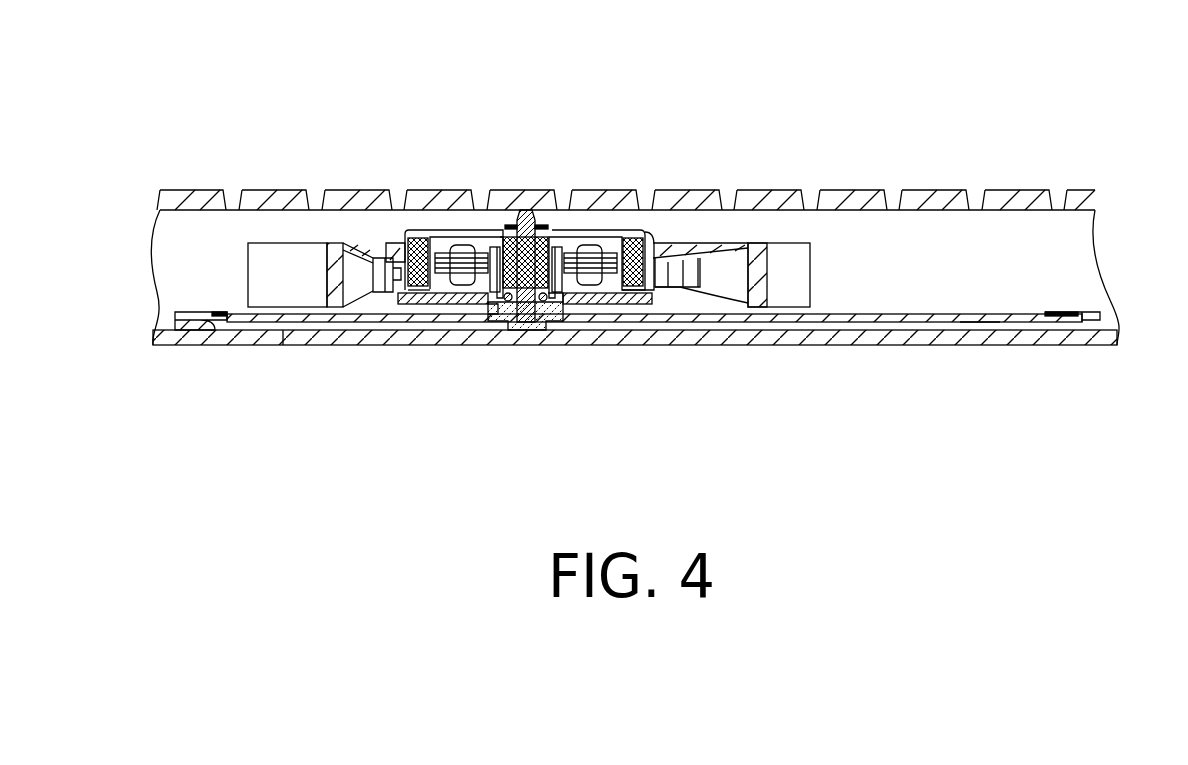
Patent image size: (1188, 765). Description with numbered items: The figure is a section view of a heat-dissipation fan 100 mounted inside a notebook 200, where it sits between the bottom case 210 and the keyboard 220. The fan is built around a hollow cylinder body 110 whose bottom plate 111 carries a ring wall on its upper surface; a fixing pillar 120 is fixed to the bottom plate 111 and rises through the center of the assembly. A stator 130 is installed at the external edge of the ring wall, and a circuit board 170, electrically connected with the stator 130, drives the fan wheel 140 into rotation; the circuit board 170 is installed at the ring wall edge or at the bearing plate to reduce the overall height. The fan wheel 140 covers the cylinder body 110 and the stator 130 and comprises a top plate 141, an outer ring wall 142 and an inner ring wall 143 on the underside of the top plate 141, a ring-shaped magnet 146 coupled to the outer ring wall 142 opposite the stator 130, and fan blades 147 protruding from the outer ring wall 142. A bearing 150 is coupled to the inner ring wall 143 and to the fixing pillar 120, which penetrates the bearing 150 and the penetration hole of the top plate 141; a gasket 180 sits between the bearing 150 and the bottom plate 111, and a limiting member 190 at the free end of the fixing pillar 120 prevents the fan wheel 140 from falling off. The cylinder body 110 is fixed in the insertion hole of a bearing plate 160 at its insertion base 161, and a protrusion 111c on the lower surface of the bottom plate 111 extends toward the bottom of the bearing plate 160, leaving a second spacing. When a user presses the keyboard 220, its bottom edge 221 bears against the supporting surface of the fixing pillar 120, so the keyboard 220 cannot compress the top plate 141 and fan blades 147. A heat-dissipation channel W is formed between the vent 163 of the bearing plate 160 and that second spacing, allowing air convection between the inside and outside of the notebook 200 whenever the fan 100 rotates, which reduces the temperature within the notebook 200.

The heat-dissipation fan 100 is at (265, 235).
The hollow cylinder body 110 is at (640, 302).
The bottom plate 111 is at (548, 316).
The protrusion 111c is at (511, 302).
The fixing pillar 120 is at (520, 228).
The stator 130 is at (632, 250).
The fan wheel 140 is at (778, 242).
The top plate 141 is at (465, 236).
The outer ring wall 142 is at (398, 262).
The inner ring wall 143 is at (579, 237).
The ring-shaped magnet 146 is at (430, 256).
The fan blades 147 is at (302, 262).
The bearing 150 is at (594, 312).
The bearing plate 160 is at (978, 323).
The insertion base 161 is at (487, 325).
The vent 163 is at (340, 323).
The circuit board 170 is at (488, 303).
The gasket 180 is at (416, 304).
The limiting member 190 is at (538, 226).
The notebook 200 is at (1082, 190).
The bottom case 210 is at (240, 340).
The keyboard 220 is at (1022, 200).
The bottom edge 221 is at (932, 200).
The heat-dissipation channel W is at (283, 345).